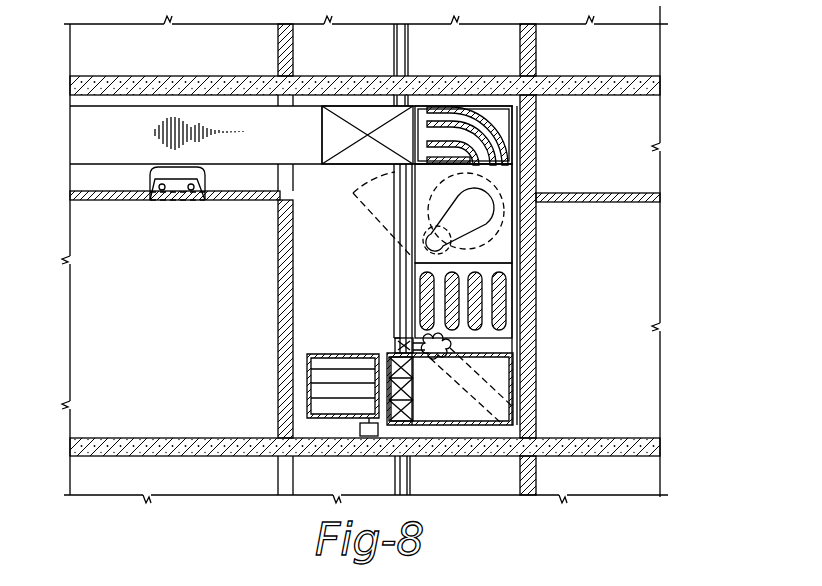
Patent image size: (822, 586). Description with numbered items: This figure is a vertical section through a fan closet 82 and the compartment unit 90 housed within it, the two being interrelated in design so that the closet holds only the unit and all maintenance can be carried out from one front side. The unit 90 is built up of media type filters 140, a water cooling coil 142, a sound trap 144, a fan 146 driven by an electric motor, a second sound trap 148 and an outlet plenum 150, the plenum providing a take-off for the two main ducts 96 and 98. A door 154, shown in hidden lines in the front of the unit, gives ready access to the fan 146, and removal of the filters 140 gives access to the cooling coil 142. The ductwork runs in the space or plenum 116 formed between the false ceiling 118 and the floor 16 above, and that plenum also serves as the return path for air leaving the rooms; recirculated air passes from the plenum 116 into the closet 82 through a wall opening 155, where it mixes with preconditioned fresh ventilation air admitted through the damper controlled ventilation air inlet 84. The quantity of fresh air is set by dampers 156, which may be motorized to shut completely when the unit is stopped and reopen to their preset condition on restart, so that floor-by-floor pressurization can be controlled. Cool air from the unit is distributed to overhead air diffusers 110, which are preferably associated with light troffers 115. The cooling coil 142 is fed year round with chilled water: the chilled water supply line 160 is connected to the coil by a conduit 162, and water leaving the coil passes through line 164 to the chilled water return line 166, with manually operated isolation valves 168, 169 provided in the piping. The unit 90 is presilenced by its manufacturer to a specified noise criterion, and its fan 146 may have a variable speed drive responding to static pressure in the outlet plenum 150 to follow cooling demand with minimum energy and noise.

The floor 16 is at (624, 421).
The fan closet 82 is at (337, 281).
The damper controlled ventilation air inlet 84 is at (307, 369).
The compartment unit 90 is at (514, 283).
The main duct 96 is at (322, 128).
The main duct 98 is at (106, 141).
The air diffuser 110 is at (150, 178).
The light troffer 115 is at (191, 190).
The space or plenum 116 is at (140, 98).
The false ceiling 118 is at (110, 200).
The media type filter 140 is at (401, 423).
The water cooling coil 142 is at (500, 388).
The sound trap 144 is at (507, 308).
The fan 146 is at (500, 228).
The sound trap 148 is at (490, 140).
The outlet plenum 150 is at (337, 105).
The door 154 is at (367, 217).
The wall opening 155 is at (280, 98).
The damper 156 is at (325, 402).
The chilled water supply line 160 is at (394, 42).
The conduit 162 is at (418, 354).
The line 164 is at (447, 349).
The chilled water return line 166 is at (410, 52).
The isolation valve 168 is at (395, 346).
The isolation valve 169 is at (399, 338).